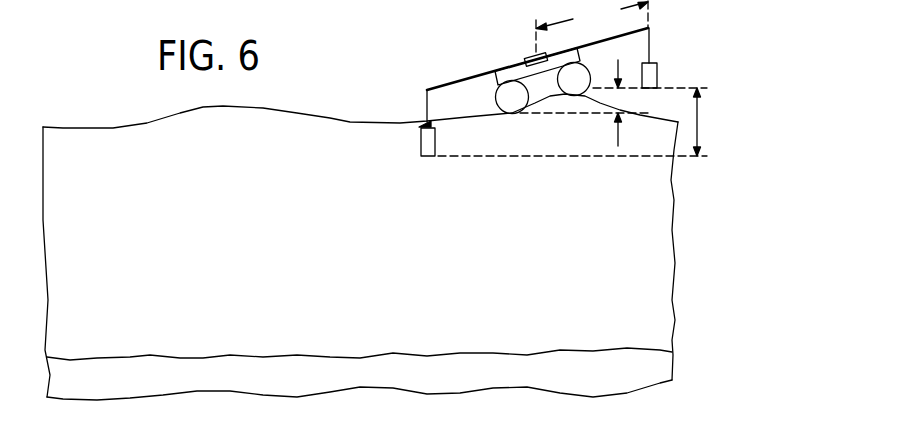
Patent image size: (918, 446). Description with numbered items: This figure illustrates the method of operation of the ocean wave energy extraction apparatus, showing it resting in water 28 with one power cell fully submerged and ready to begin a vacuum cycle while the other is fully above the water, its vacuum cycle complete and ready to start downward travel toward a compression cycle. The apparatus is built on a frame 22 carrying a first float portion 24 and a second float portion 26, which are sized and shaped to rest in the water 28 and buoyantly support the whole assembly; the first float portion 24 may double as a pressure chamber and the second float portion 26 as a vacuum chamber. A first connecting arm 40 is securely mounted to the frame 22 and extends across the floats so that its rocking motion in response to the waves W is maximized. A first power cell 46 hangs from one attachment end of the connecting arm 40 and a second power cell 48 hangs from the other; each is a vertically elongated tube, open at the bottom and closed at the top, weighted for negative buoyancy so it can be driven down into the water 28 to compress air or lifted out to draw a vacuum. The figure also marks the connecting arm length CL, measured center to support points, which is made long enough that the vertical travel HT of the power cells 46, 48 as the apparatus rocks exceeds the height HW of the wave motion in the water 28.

The frame 22 is at (517, 63).
The first float portion 24 is at (584, 88).
The second float portion 26 is at (522, 106).
The water 28 is at (501, 266).
The first connecting arm 40 is at (460, 81).
The first power cell 46 is at (422, 157).
The second power cell 48 is at (658, 77).
The waves W is at (195, 110).
The height of wave motion HW is at (617, 101).
The vertical travel of the power cells HT is at (700, 118).
The length of the connecting arm CL is at (592, 26).